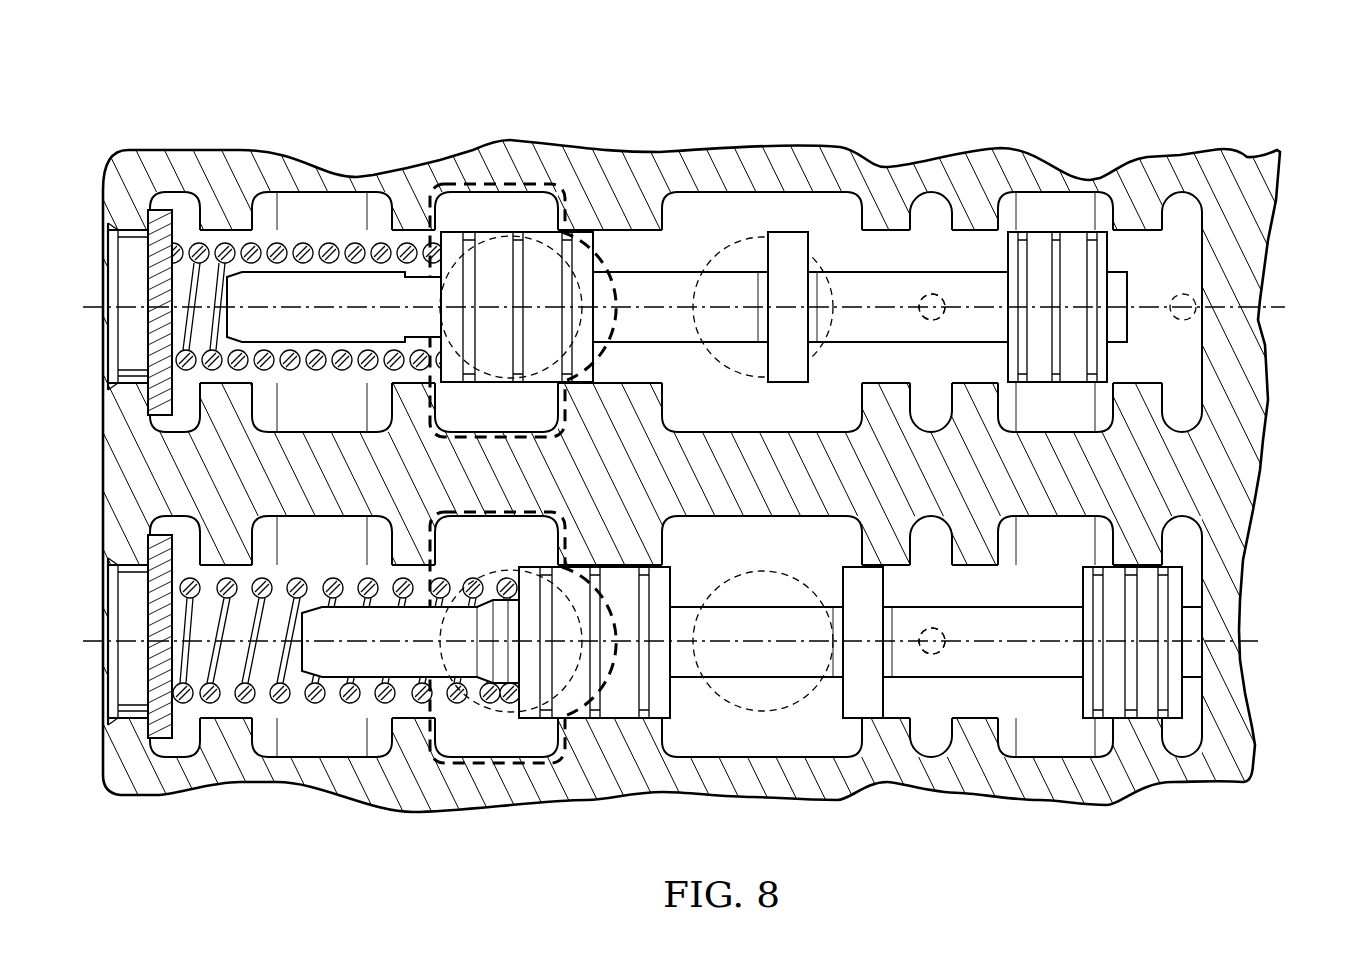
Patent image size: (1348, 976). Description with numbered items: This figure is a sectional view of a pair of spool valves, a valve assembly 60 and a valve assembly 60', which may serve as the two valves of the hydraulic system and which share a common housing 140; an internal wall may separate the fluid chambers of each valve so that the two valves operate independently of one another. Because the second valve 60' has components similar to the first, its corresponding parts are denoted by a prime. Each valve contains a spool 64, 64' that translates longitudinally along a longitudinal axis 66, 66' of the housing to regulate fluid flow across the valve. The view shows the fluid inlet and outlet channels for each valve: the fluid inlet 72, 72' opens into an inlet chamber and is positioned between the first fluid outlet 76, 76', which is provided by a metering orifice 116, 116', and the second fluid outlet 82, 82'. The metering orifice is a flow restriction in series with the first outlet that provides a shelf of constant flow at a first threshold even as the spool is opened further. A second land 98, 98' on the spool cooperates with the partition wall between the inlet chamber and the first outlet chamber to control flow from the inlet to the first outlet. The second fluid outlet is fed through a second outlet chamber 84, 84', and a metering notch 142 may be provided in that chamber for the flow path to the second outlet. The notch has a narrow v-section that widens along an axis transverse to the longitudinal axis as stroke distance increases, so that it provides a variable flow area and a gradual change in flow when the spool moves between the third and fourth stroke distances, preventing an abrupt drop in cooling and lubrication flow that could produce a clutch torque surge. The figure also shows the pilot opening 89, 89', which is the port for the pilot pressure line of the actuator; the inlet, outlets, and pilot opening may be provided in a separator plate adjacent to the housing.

The valve assembly 60 is at (655, 715).
The valve assembly 60' is at (655, 229).
The spool 64 is at (692, 726).
The spool 64' is at (617, 221).
The longitudinal axis 66 is at (102, 640).
The longitudinal axis 66' is at (102, 305).
The fluid inlet 72 is at (762, 697).
The fluid inlet 72' is at (762, 267).
The first fluid outlet 76 is at (989, 743).
The first fluid outlet 76' is at (991, 211).
The second fluid outlet 82 is at (550, 717).
The second fluid outlet 82' is at (525, 231).
The second outlet chamber 84 is at (497, 691).
The second outlet chamber 84' is at (497, 251).
The pilot opening 89 is at (1246, 636).
The pilot opening 89' is at (1251, 312).
The second land 98 is at (863, 642).
The second land 98' is at (822, 241).
The metering orifice 116 is at (932, 641).
The metering orifice 116' is at (932, 307).
The common housing 140 is at (320, 783).
The metering notch 142 is at (608, 677).